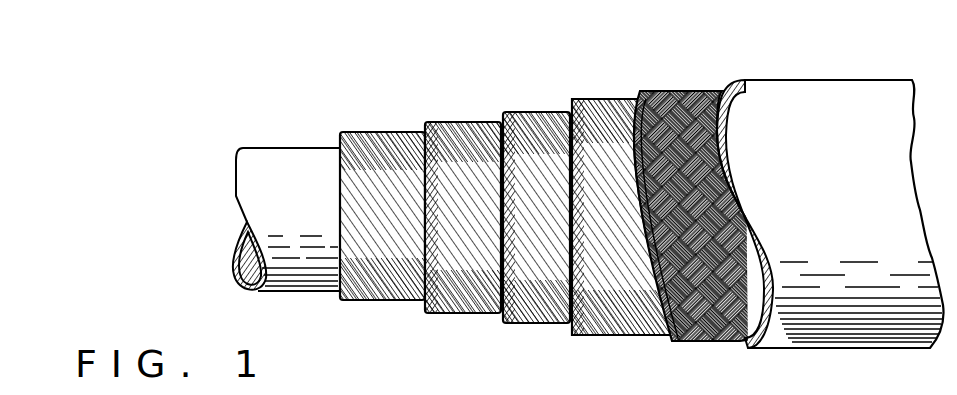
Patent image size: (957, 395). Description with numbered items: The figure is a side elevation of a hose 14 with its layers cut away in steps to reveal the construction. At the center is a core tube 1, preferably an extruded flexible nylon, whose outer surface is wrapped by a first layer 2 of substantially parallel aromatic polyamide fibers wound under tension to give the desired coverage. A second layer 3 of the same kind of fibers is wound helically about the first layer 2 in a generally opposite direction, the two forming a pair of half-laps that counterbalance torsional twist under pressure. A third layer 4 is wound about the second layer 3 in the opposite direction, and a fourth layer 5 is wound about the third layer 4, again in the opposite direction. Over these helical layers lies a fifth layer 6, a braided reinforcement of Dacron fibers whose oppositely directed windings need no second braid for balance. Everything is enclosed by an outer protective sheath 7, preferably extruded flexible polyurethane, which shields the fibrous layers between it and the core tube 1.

The core tube 1 is at (300, 148).
The first layer 2 is at (386, 132).
The second layer 3 is at (453, 313).
The third layer 4 is at (533, 112).
The fourth layer 5 is at (605, 335).
The fifth layer 6 is at (698, 91).
The outer protective sheath 7 is at (855, 348).
The hose 14 is at (600, 84).